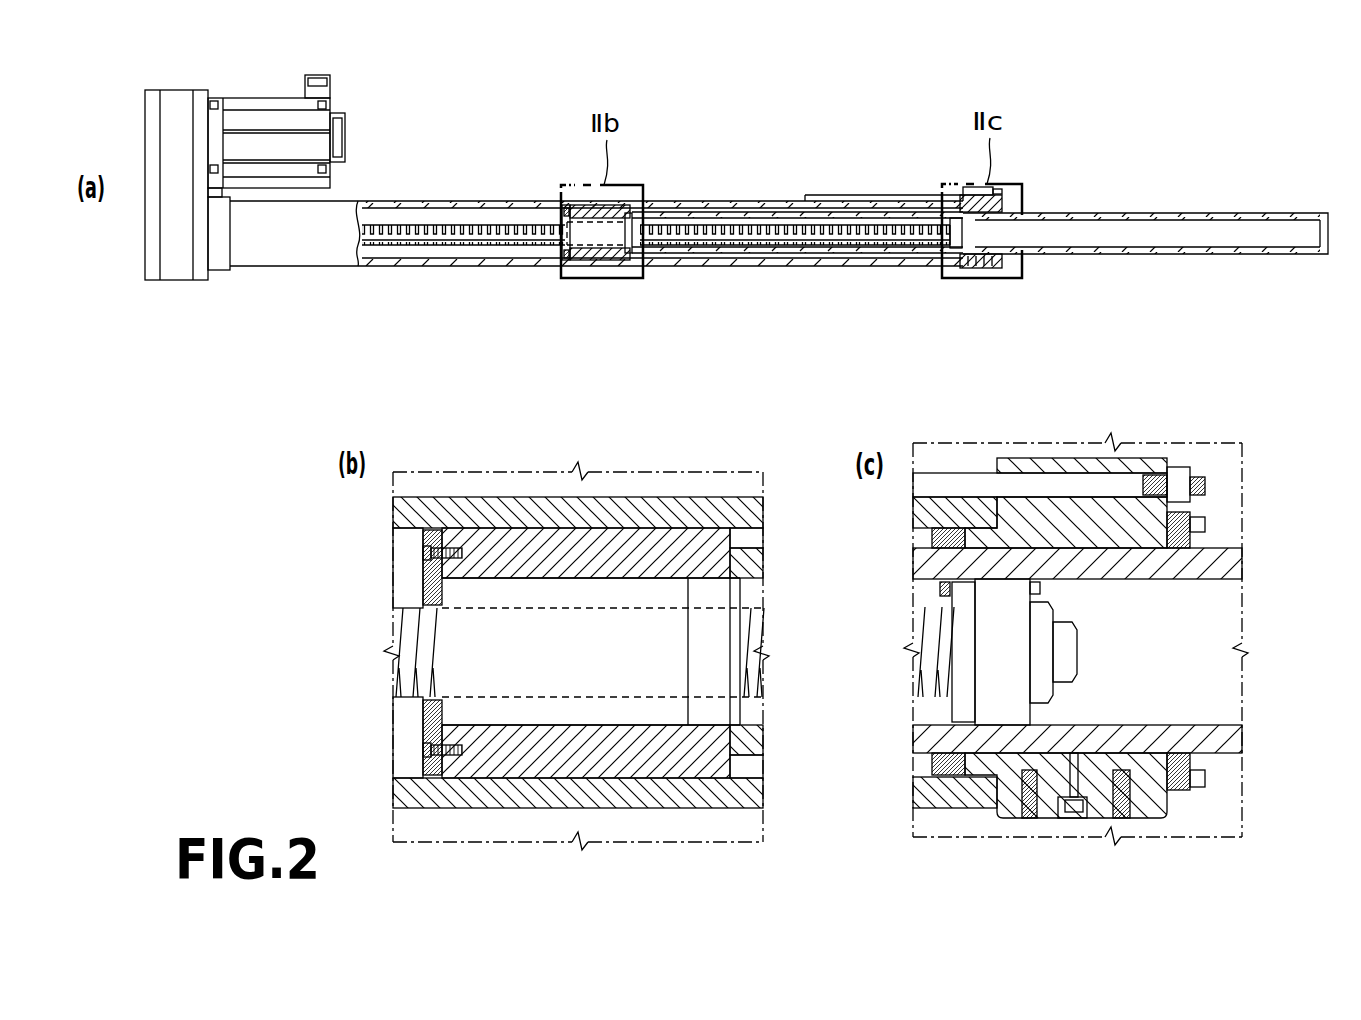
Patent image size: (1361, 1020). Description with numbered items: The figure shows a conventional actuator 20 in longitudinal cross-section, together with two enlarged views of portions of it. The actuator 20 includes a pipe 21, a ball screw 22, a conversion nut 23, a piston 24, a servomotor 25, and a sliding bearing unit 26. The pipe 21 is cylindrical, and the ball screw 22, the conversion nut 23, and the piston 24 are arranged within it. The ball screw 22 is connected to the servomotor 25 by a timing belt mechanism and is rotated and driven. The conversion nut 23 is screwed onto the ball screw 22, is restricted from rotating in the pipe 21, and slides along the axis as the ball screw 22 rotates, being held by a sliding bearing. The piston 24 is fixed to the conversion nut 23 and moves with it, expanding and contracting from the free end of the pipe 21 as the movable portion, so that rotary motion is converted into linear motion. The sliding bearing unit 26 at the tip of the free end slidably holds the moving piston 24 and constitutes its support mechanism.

The actuator 20 is at (1178, 106).
The pipe 21 is at (434, 268).
The ball screw 22 is at (516, 247).
The conversion nut 23 is at (598, 262).
The piston 24 is at (1104, 214).
The servomotor 25 is at (263, 100).
The sliding bearing unit 26 is at (962, 272).